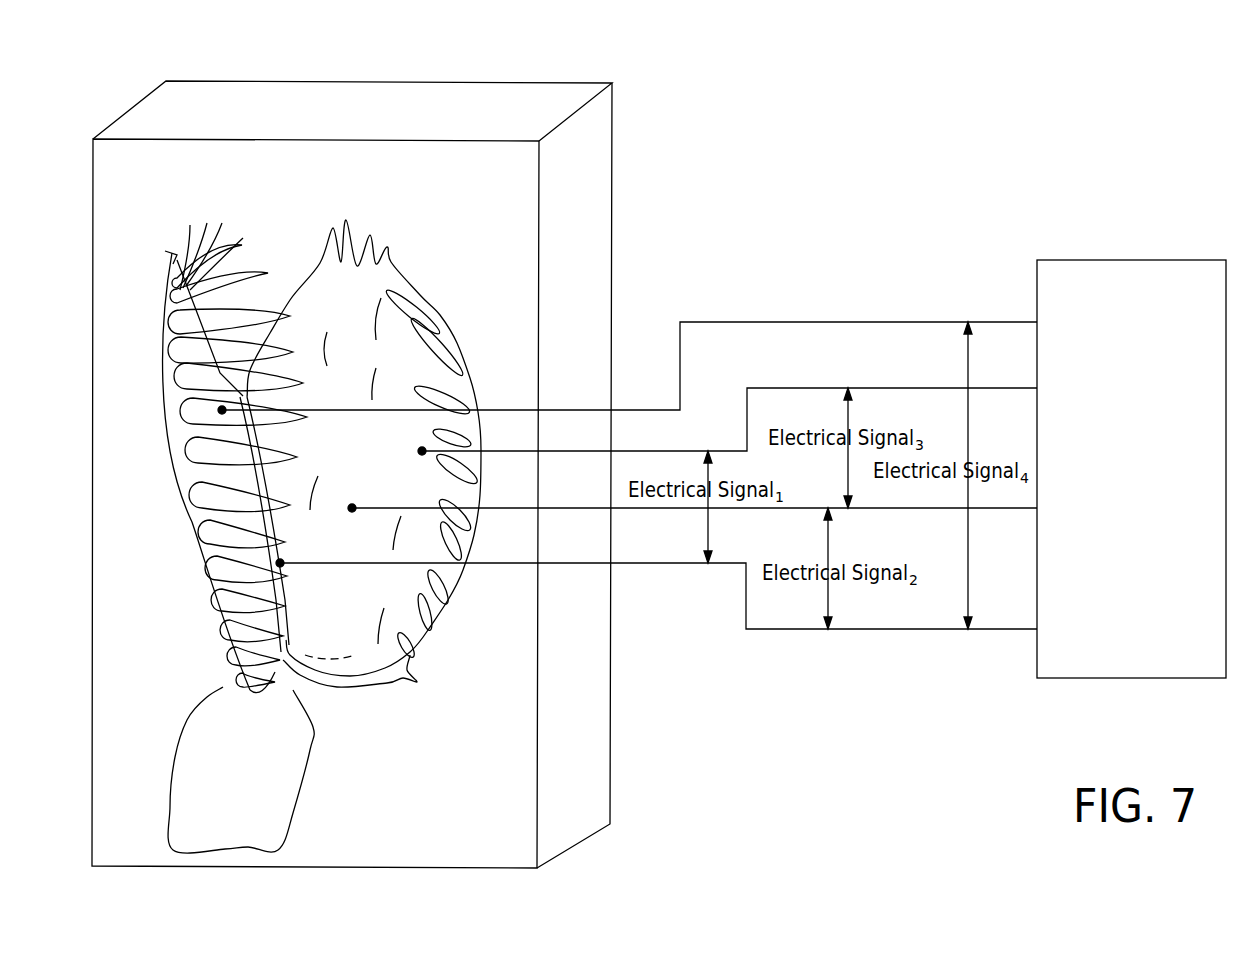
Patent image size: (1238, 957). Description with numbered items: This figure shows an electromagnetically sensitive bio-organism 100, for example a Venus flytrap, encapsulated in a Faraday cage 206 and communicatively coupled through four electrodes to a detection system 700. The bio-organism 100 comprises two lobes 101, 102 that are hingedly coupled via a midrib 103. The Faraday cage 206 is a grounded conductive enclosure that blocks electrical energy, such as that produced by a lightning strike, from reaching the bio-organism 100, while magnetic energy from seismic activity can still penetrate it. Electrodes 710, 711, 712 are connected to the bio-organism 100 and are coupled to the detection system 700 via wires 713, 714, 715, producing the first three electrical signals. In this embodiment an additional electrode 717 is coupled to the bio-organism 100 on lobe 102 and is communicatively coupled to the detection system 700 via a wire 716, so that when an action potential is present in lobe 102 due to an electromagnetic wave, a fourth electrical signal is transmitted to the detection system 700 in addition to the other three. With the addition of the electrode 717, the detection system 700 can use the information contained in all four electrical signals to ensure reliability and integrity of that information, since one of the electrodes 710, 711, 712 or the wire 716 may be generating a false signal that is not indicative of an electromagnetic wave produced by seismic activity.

The Faraday cage 206 is at (382, 82).
The bio-organism 100 is at (305, 512).
The lobe 101 is at (359, 316).
The lobe 102 is at (190, 522).
The midrib 103 is at (265, 447).
The electrode 710 is at (284, 565).
The electrode 711 is at (355, 512).
The electrode 712 is at (422, 455).
The additional electrode 717 is at (218, 410).
The wire 713 is at (538, 563).
The wire 714 is at (538, 507).
The wire 715 is at (538, 450).
The wire 716 is at (538, 383).
The detection system 700 is at (1115, 459).